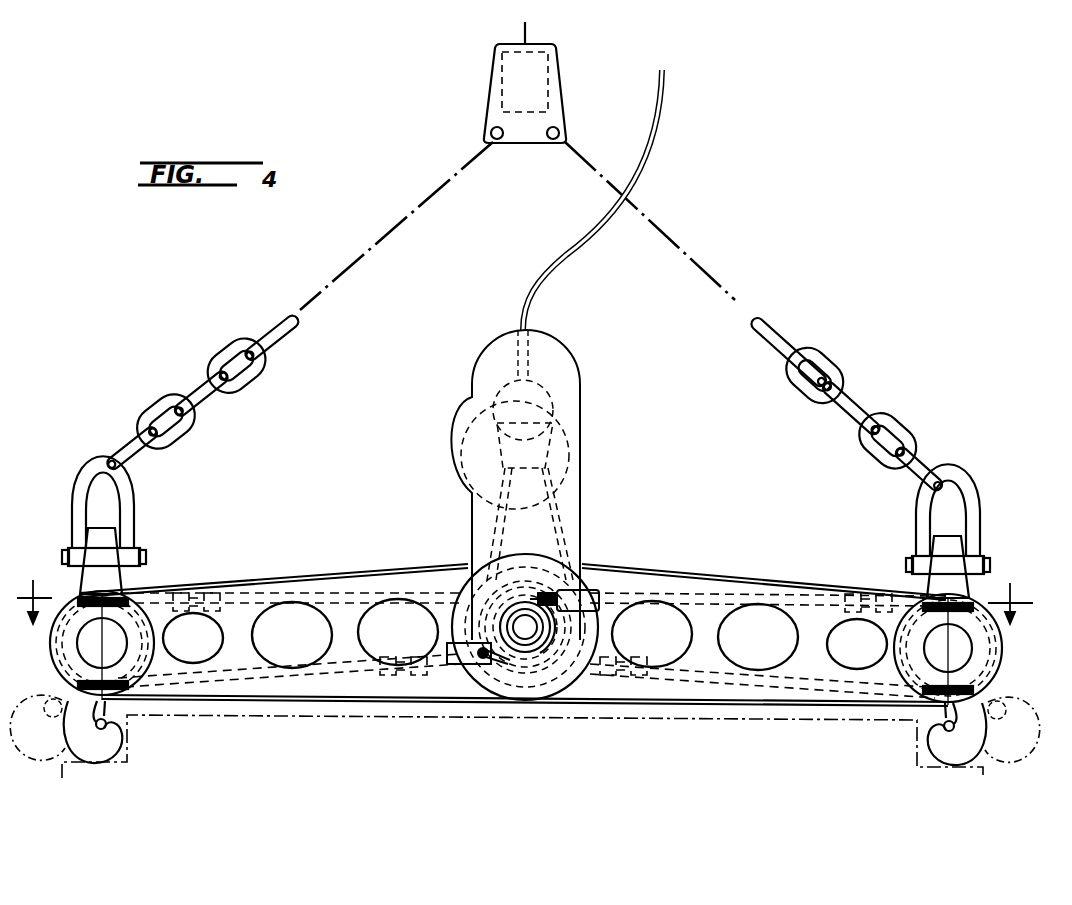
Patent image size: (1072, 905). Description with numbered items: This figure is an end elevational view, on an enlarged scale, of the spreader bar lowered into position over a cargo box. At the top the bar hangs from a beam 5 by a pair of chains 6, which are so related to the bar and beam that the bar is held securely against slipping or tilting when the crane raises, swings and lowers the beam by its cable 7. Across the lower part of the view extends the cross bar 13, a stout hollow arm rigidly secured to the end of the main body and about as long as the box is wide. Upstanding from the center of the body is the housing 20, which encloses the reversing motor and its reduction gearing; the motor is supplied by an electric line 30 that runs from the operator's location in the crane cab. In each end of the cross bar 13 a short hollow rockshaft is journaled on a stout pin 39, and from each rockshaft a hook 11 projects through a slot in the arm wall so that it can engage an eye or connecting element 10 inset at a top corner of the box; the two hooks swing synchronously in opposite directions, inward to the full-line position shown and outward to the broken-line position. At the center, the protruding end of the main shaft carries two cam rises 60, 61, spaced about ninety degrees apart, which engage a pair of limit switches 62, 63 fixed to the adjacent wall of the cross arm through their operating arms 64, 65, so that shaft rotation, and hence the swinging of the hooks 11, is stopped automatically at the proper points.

The beam 5 is at (560, 80).
The chains 6 is at (335, 280).
The electric line 30 is at (660, 120).
The housing 20 is at (580, 428).
The cross bar 13 is at (678, 574).
The pin 39 is at (112, 636).
The cable 7 is at (524, 601).
The hook 11 is at (70, 740).
The connecting element 10 is at (112, 740).
The cam rise 60 is at (518, 655).
The cam rise 61 is at (550, 628).
The limit switch 62 is at (455, 666).
The limit switch 63 is at (598, 588).
The operating arm 64 is at (500, 662).
The operating arm 65 is at (560, 580).